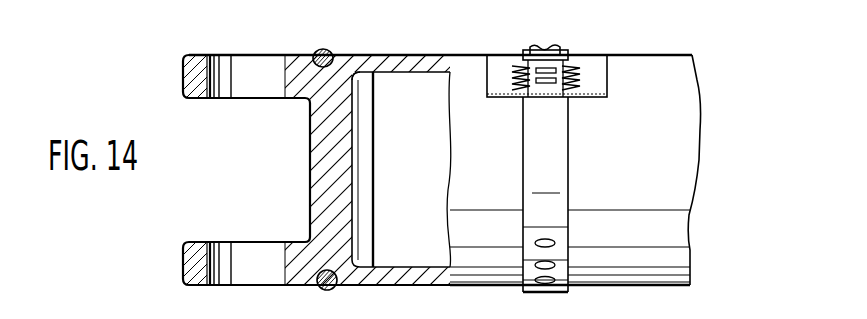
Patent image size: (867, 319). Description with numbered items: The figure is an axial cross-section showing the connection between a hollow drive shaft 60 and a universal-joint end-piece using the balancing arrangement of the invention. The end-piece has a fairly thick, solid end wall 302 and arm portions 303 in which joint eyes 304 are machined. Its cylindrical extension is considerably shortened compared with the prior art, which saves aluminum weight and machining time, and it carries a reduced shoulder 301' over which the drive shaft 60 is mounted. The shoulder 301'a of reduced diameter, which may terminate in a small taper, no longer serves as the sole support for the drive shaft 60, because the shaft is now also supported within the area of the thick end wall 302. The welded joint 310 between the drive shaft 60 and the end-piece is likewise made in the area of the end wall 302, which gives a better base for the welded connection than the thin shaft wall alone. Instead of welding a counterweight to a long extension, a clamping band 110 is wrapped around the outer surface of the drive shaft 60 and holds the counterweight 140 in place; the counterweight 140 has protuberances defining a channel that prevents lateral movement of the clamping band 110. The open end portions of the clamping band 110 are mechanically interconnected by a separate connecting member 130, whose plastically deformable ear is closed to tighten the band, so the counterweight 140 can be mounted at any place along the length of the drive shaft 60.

The hollow drive shaft 60 is at (666, 67).
The clamping band 110 is at (552, 164).
The separate connecting member 130 is at (558, 40).
The counterweight 140 is at (594, 62).
The reduced shoulder 301' is at (374, 142).
The shoulder of reduced diameter 301'a is at (393, 165).
The end wall 302 is at (357, 152).
The arm portions 303 is at (194, 250).
The joint eyes 304 is at (256, 258).
The welded joint 310 is at (322, 49).